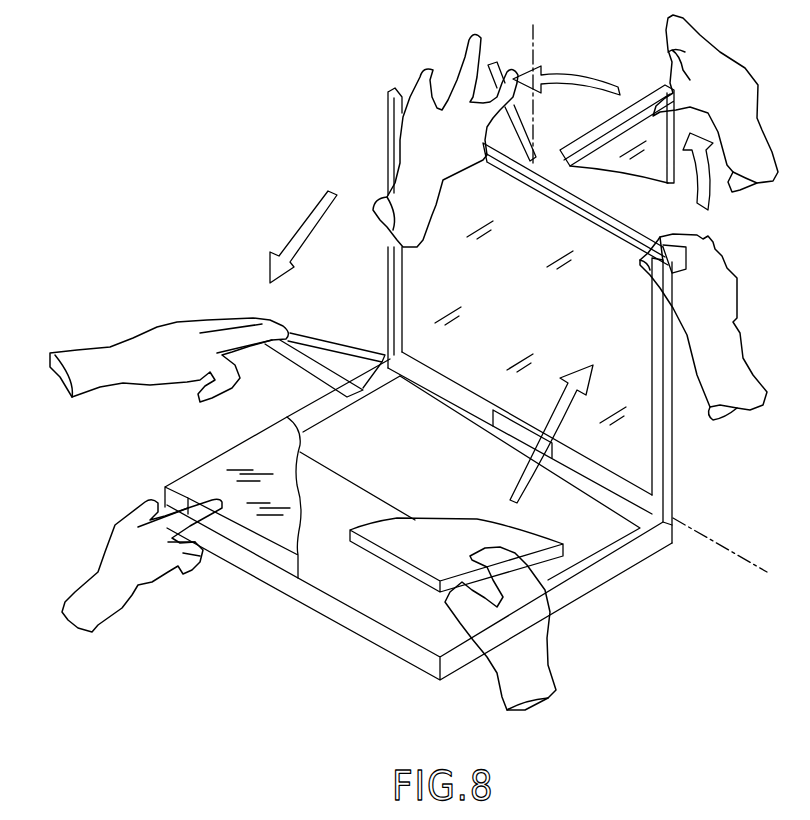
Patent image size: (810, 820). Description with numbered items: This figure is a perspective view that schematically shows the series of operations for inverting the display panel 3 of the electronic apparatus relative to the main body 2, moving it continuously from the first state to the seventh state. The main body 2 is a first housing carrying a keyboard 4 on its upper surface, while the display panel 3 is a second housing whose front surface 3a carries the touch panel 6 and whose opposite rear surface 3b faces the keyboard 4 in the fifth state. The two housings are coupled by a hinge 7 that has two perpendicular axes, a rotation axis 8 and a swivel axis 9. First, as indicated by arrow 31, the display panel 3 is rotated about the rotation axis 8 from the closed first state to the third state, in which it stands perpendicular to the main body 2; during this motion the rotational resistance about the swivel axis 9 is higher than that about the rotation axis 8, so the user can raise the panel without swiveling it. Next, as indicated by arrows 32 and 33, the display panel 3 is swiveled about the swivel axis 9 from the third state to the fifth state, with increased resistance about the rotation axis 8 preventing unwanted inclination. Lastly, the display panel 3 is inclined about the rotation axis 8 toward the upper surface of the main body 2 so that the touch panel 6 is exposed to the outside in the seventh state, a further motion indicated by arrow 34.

The main body 2 is at (583, 594).
The display panel 3 is at (673, 468).
The front surface 3a is at (642, 113).
The rear surface 3b is at (500, 133).
The keyboard 4 is at (617, 539).
The touch panel 6 is at (643, 422).
The hinge 7 is at (500, 442).
The rotation axis 8 is at (757, 555).
The swivel axis 9 is at (533, 28).
The arrow 31 is at (522, 483).
The arrow 32 is at (700, 208).
The arrow 33 is at (615, 80).
The insertion direction arrow 34 is at (298, 228).